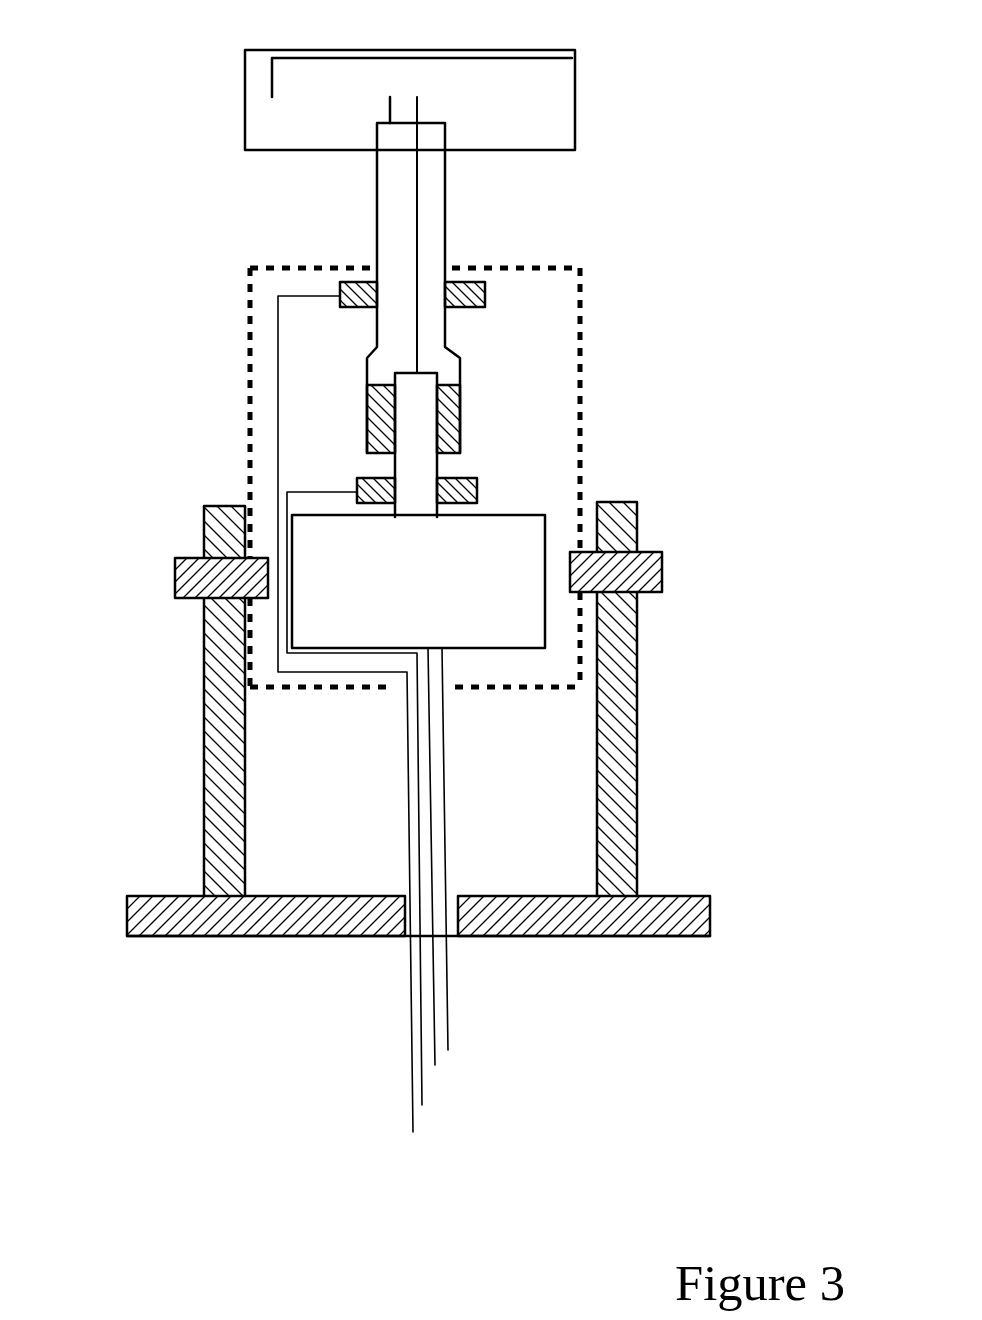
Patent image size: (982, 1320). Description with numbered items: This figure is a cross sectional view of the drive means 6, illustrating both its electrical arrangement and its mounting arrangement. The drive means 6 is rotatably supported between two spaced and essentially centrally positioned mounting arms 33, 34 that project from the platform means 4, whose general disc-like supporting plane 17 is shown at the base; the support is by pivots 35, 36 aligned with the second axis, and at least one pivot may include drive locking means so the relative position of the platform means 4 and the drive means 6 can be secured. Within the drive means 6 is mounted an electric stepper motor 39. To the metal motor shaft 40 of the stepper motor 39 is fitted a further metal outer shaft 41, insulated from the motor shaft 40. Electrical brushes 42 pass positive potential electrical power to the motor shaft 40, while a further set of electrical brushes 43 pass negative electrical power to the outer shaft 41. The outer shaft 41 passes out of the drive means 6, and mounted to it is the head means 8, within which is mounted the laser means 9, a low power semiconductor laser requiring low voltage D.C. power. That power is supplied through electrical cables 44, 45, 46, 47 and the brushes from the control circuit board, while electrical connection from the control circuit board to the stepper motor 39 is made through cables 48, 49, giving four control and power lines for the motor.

The platform means 4 is at (683, 937).
The drive means 6 is at (243, 292).
The head means 8 is at (245, 97).
The laser means 9 is at (548, 68).
The supporting plane 17 is at (670, 888).
The mounting arm 33 is at (203, 755).
The mounting arm 34 is at (637, 730).
The pivot 35 is at (180, 558).
The pivot 36 is at (660, 552).
The electric stepper motor 39 is at (547, 520).
The motor shaft 40 is at (430, 393).
The outer shaft 41 is at (445, 227).
The electrical brushes 42 is at (357, 478).
The electrical brushes 43 is at (485, 295).
The electrical cable 44 is at (387, 107).
The electrical cable 45 is at (420, 185).
The electrical cable 46 is at (275, 363).
The electrical cable 47 is at (300, 490).
The cable 48 is at (435, 1052).
The cable 49 is at (448, 1003).